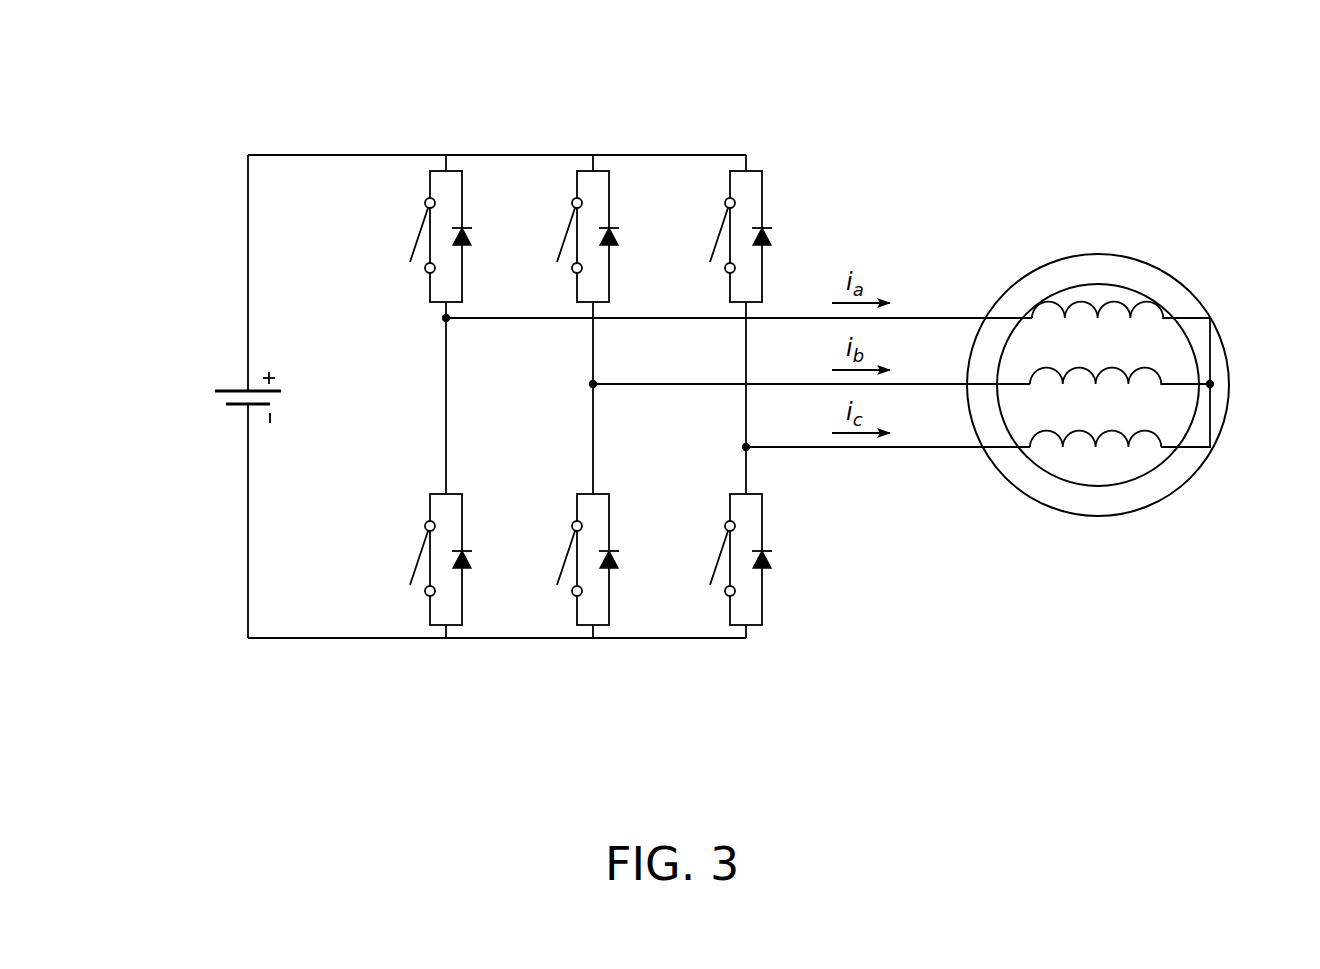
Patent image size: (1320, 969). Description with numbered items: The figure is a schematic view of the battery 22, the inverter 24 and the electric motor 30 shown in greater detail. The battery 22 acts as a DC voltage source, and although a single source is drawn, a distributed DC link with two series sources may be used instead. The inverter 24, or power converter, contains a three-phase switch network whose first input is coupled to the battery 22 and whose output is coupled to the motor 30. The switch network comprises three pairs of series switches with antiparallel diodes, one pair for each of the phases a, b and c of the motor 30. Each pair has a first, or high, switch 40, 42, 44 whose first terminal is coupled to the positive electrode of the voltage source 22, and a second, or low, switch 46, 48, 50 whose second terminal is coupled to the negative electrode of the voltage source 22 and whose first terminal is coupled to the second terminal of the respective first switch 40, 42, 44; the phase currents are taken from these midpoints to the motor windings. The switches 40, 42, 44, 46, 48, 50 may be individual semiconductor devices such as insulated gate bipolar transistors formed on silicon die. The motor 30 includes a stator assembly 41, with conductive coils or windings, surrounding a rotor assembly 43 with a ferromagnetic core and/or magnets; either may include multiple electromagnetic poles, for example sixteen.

The battery 22 is at (210, 411).
The inverter 24 is at (436, 98).
The motor 30 is at (1127, 379).
The first switch 40 is at (400, 243).
The first switch 42 is at (547, 243).
The first switch 44 is at (700, 243).
The second switch 46 is at (400, 568).
The second switch 48 is at (547, 568).
The second switch 50 is at (700, 568).
The stator assembly 41 is at (1075, 254).
The rotor assembly 43 is at (1098, 487).